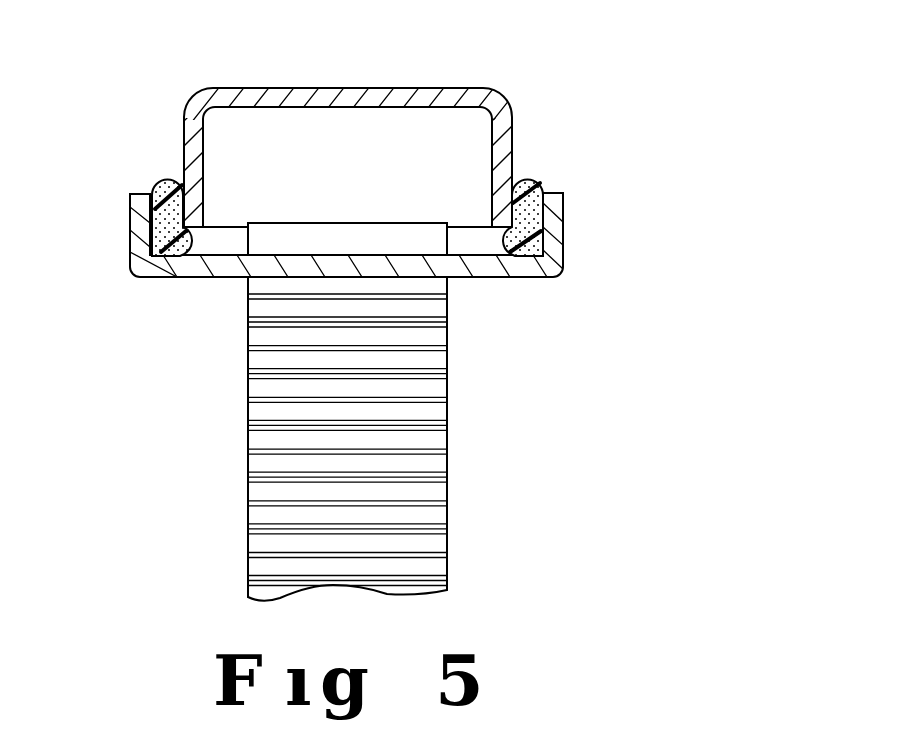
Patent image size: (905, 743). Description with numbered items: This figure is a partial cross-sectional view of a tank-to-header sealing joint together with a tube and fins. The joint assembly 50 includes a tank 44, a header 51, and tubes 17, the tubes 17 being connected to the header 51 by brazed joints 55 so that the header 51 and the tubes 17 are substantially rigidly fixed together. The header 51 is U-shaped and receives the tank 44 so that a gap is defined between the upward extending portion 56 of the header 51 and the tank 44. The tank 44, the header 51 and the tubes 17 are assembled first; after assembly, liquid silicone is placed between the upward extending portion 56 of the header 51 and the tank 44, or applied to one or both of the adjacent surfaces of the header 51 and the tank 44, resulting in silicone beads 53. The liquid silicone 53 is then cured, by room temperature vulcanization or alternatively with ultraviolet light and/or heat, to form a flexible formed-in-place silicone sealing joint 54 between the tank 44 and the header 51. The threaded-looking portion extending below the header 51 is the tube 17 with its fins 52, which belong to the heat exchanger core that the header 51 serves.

The tank 44 is at (490, 88).
The tank-to-header joint 54 is at (168, 177).
The silicone beads 53 is at (531, 183).
The upward extending portion 56 is at (148, 215).
The header 51 is at (314, 282).
The brazed joints 55 is at (455, 278).
The fins 52 is at (395, 398).
The tubes 17 is at (427, 412).
The joint assembly 50 is at (143, 497).